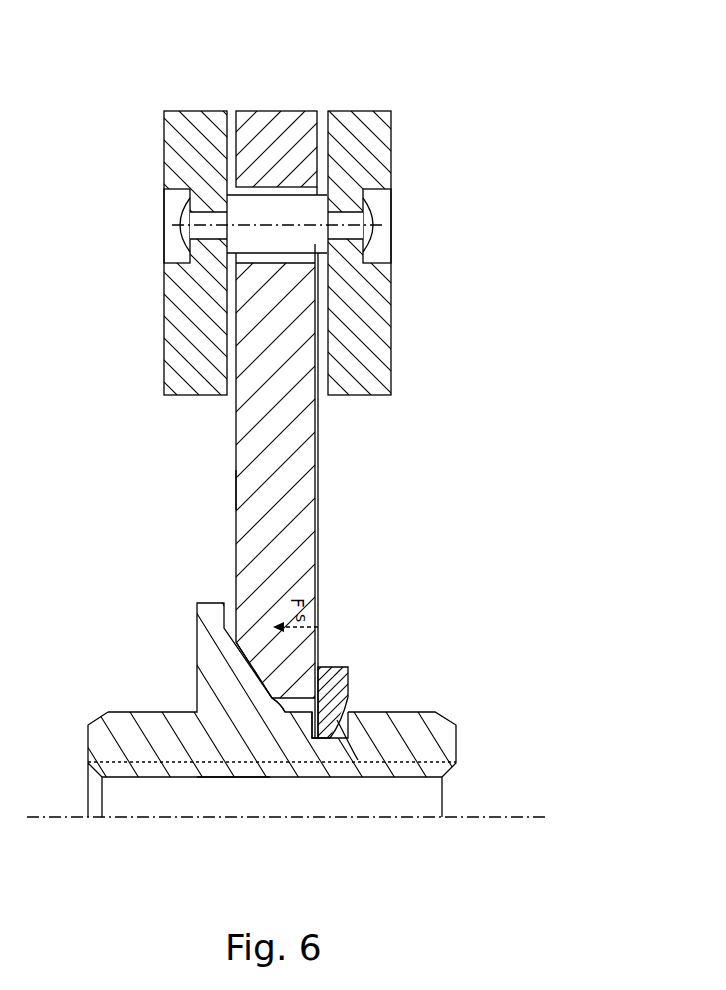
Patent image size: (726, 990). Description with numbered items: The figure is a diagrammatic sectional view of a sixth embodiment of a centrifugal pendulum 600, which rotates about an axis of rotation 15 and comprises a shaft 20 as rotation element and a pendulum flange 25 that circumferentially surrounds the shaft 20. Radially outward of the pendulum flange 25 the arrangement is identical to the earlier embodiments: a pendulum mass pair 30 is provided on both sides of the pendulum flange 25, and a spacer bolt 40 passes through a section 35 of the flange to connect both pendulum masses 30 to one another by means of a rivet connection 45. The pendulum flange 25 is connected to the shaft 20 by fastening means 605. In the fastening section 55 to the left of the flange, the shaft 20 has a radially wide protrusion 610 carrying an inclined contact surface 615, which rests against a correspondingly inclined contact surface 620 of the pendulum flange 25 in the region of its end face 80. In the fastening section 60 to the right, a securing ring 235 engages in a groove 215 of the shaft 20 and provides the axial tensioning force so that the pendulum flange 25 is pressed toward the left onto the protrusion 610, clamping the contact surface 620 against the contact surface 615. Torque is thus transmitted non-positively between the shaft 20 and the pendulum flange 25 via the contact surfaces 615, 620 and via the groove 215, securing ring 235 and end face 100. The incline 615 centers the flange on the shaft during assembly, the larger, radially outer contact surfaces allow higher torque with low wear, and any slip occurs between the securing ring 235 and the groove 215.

The axis of rotation 15 is at (503, 817).
The shaft 20 is at (456, 743).
The pendulum flange 25 is at (307, 480).
The pendulum mass pair 30 is at (170, 347).
The section 35 is at (253, 186).
The spacer bolt 40 is at (278, 208).
The rivet connection 45 is at (165, 230).
The fastening section 55 is at (270, 780).
The fastening section 60 is at (348, 780).
The end face 80 is at (236, 490).
The end face 100 is at (318, 408).
The groove 215 is at (337, 720).
The securing ring 235 is at (340, 695).
The centrifugal pendulum 600 is at (512, 573).
The fastening means 605 is at (360, 623).
The protrusion 610 is at (212, 648).
The inclined contact surface 615 is at (250, 652).
The inclined contact surface 620 is at (260, 690).